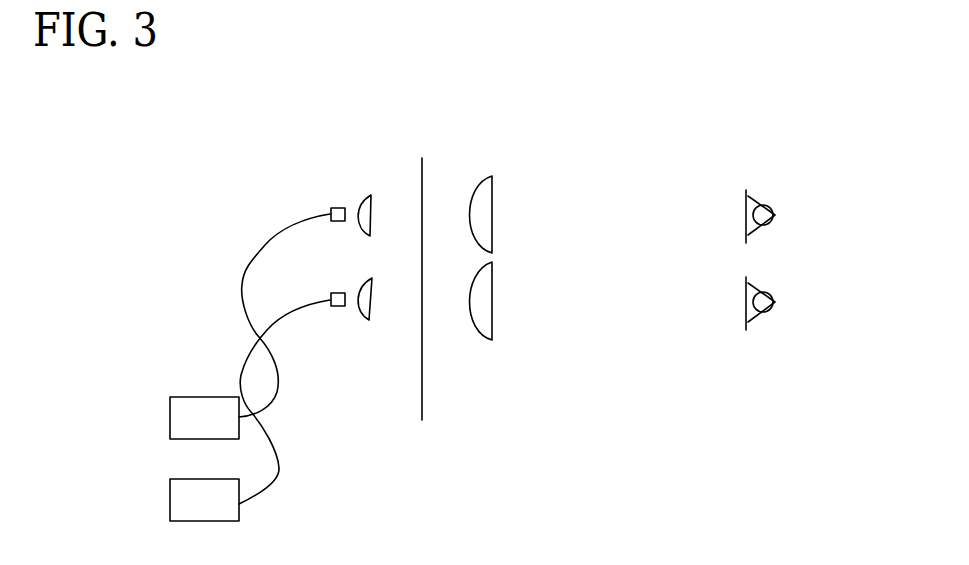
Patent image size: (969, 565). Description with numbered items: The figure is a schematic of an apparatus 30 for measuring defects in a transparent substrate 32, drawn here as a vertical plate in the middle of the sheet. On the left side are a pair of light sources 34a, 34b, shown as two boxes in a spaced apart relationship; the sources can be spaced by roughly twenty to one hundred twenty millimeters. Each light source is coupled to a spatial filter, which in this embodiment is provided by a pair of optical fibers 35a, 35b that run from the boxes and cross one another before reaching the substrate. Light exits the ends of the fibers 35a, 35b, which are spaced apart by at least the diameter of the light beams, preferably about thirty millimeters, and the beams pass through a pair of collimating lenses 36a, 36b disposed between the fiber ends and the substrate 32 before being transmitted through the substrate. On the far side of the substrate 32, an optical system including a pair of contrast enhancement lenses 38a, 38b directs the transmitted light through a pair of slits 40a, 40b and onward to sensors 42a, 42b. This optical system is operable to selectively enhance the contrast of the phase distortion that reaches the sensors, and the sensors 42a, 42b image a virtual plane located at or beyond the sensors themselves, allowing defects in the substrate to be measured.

The apparatus 30 is at (738, 104).
The transparent substrate 32 is at (422, 393).
The light source 34a is at (170, 499).
The light source 34b is at (170, 410).
The optical fiber 35a is at (280, 468).
The optical fiber 35b is at (242, 273).
The collimating lens 36a is at (366, 321).
The collimating lens 36b is at (360, 203).
The contrast enhancement lens 38a is at (480, 300).
The contrast enhancement lens 38b is at (487, 190).
The slit 40a is at (746, 304).
The slit 40b is at (746, 213).
The sensor 42a is at (773, 298).
The sensor 42b is at (773, 212).